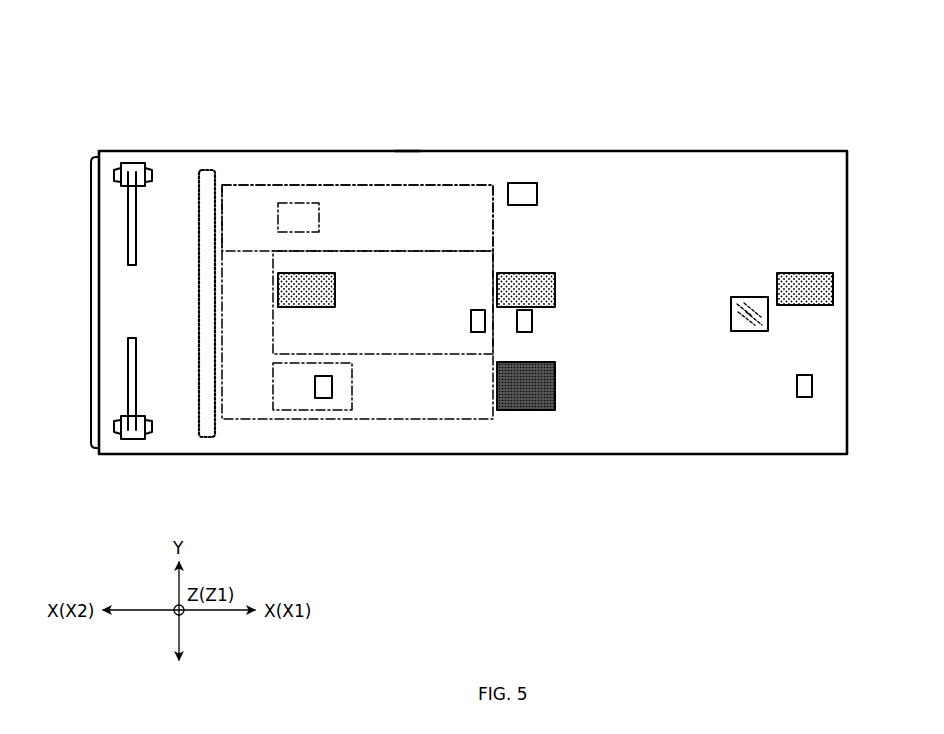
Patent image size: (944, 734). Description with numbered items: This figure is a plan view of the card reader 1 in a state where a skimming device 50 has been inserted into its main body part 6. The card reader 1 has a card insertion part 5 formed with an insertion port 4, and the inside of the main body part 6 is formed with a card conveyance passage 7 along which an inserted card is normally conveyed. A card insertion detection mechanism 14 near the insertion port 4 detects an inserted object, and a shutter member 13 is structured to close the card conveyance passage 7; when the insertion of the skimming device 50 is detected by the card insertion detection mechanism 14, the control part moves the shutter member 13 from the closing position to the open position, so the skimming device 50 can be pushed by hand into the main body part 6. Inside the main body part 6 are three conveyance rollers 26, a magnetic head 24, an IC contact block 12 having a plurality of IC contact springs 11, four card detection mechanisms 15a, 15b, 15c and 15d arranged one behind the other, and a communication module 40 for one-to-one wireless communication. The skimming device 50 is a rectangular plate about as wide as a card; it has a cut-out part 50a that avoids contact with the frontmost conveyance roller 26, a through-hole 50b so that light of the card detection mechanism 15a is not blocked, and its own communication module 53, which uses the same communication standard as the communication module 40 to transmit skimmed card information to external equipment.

The card reader 1 is at (473, 263).
The insertion port 4 is at (91, 189).
The card insertion part 5 is at (163, 151).
The main body part 6 is at (406, 151).
The card conveyance passage 7 is at (606, 204).
The IC contact springs 11 is at (758, 332).
The IC contact block 12 is at (742, 316).
The shutter member 13 is at (207, 170).
The card insertion detection mechanism 14 is at (121, 447).
The card detection mechanism 15a is at (323, 399).
The card detection mechanism 15b is at (486, 320).
The card detection mechanism 15c is at (533, 318).
The card detection mechanism 15d is at (805, 398).
The magnetic head 24 is at (540, 412).
The conveyance rollers 26 is at (336, 288).
The communication module 40 is at (520, 183).
The skimming device 50 is at (321, 185).
The cut-out part 50a is at (441, 253).
The through-hole 50b is at (290, 418).
The communication module 53 is at (280, 203).